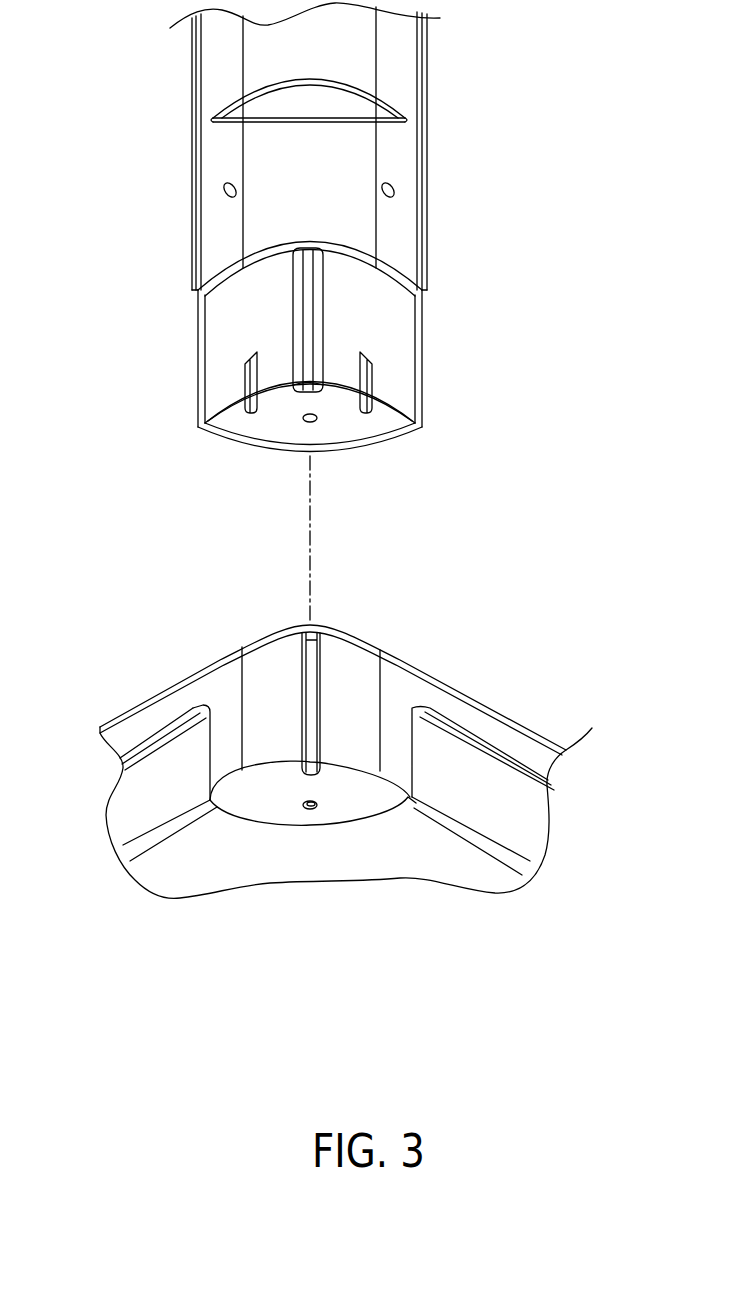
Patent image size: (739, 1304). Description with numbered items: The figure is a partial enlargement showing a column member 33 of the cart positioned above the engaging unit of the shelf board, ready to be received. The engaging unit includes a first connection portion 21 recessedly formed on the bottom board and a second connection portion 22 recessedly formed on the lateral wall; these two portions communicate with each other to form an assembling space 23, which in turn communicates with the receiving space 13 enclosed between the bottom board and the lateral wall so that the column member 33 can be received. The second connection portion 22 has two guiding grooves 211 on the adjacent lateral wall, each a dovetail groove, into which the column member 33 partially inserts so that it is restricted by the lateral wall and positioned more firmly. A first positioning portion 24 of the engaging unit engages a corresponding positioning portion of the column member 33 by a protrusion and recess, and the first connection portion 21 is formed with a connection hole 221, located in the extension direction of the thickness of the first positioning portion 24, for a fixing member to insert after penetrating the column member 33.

The column member 33 is at (222, 228).
The receiving space 13 is at (425, 857).
The second connection portion 22 is at (265, 655).
The guiding groove 211 is at (208, 712).
The first positioning portion 24 is at (313, 657).
The first connection portion 21 is at (347, 783).
The connection hole 221 is at (318, 803).
The assembling space 23 is at (286, 717).